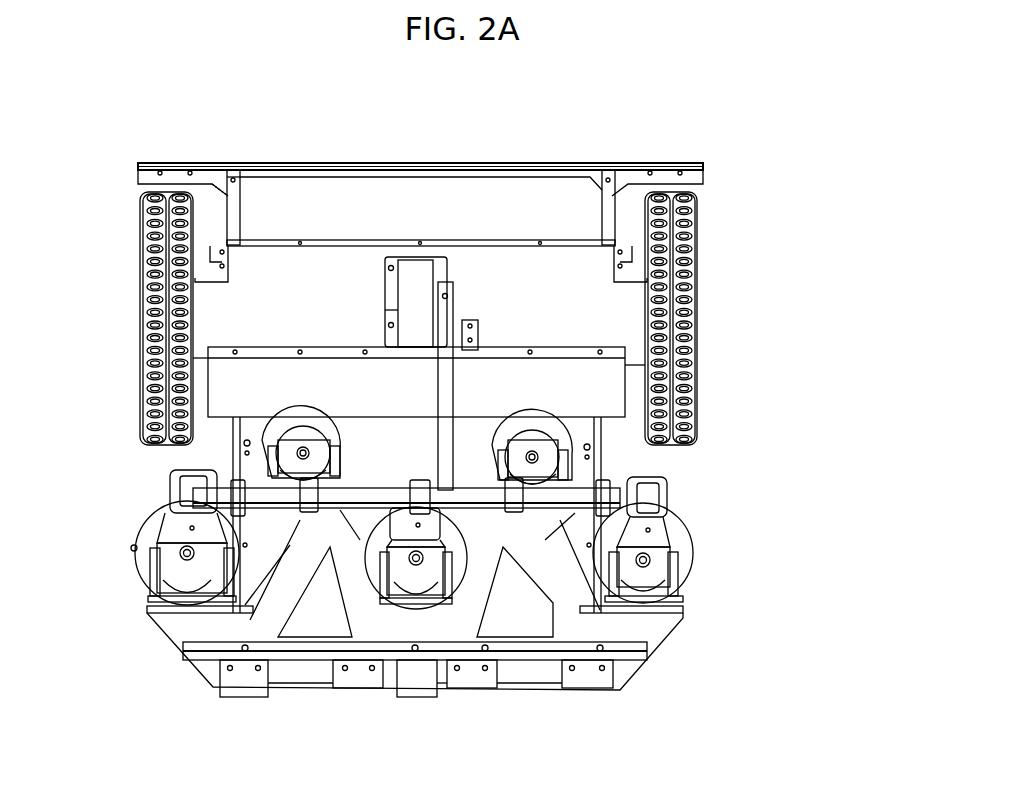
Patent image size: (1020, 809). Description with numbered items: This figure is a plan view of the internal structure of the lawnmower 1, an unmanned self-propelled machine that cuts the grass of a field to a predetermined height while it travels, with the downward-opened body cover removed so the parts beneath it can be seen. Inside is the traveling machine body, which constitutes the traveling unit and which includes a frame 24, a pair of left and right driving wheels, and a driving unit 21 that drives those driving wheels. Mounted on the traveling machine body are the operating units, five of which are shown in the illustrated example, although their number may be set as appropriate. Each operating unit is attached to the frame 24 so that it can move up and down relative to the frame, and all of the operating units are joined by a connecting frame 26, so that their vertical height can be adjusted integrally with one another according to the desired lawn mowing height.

The lawnmower 1 is at (765, 163).
The driving unit 21 is at (313, 240).
The frame 24 is at (441, 640).
The connecting frame 26 is at (345, 497).